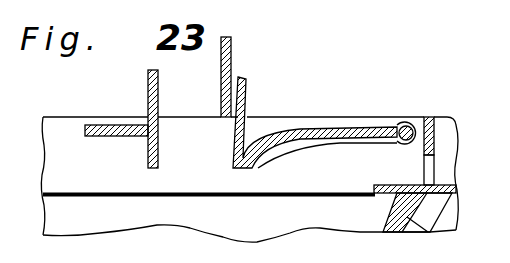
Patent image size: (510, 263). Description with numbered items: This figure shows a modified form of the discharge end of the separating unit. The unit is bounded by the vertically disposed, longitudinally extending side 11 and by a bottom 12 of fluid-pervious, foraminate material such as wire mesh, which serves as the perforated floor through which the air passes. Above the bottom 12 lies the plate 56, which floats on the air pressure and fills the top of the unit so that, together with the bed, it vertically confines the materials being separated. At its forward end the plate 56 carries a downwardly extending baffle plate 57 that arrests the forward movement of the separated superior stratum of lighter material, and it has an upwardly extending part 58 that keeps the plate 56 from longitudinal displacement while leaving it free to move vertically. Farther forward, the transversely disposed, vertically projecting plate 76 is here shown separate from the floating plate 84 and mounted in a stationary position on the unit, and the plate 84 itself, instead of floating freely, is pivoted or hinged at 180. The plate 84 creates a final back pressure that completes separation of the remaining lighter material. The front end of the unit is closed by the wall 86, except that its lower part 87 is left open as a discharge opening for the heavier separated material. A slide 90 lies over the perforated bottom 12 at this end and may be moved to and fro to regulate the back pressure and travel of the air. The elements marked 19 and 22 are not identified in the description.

The side 11 is at (55, 118).
The bottom 12 is at (230, 197).
The wedge member 19 is at (346, 216).
The wedge surface 22 is at (420, 225).
The plate 56 is at (140, 124).
The baffle plate 57 is at (158, 162).
The upwardly extending part 58 is at (148, 86).
The vertically projecting plate 76 is at (232, 55).
The plate 84 is at (330, 127).
The wall 86 is at (432, 135).
The lower part 87 is at (437, 170).
The slide 90 is at (395, 166).
The pivot 180 is at (405, 122).